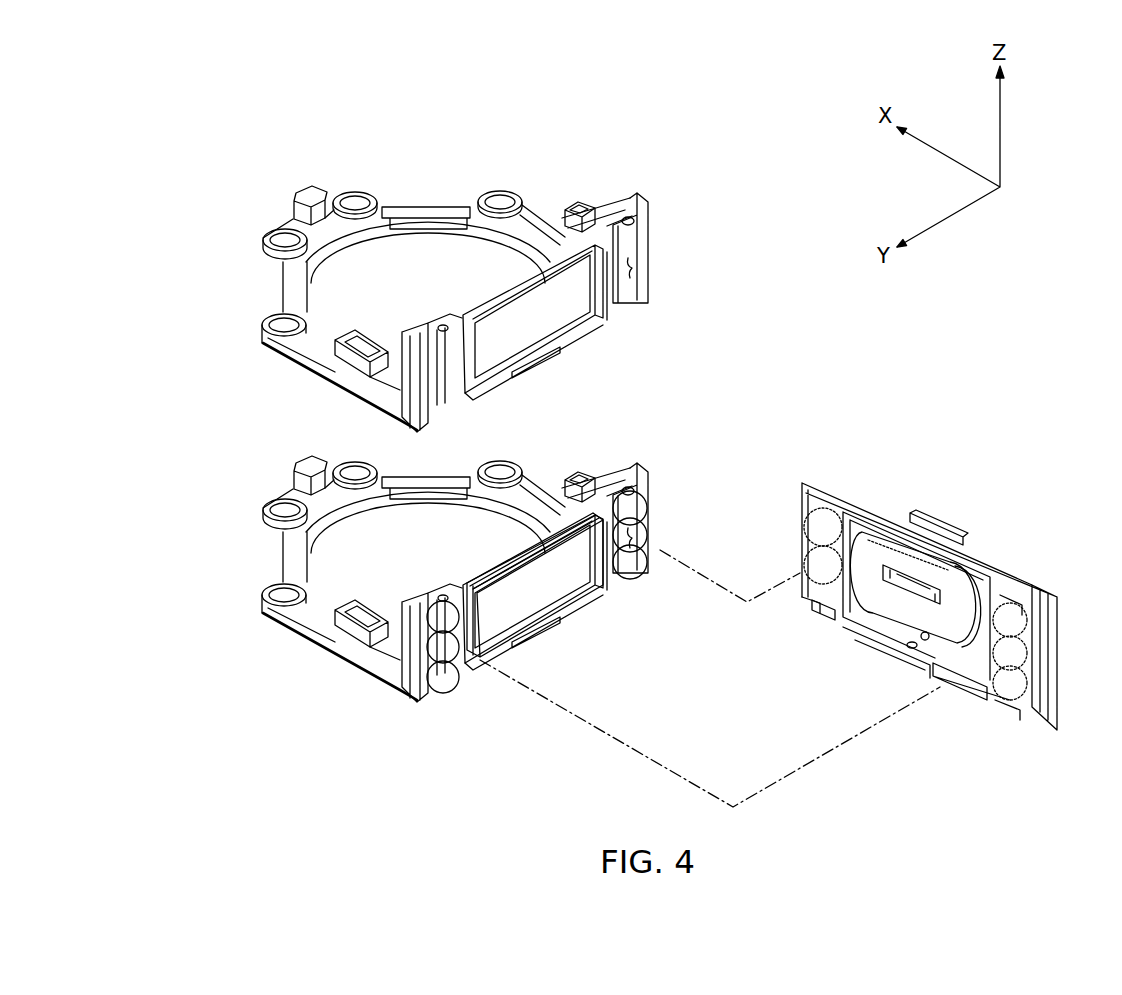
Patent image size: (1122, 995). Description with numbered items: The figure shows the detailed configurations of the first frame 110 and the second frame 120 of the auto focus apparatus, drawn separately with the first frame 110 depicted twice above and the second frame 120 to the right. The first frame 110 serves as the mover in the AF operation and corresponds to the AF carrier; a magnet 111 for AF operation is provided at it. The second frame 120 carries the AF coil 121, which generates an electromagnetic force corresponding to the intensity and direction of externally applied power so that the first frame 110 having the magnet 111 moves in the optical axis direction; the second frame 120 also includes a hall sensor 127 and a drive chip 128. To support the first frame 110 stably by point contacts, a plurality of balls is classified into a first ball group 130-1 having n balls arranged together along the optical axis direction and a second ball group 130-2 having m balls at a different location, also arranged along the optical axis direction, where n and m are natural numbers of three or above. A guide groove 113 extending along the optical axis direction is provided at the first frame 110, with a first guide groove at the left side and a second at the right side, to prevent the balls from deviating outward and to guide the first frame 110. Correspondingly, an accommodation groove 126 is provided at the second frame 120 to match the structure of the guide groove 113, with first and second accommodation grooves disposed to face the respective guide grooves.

The first frame 110 is at (521, 444).
The magnet 111 is at (543, 577).
The guide groove 113 is at (638, 258).
The second frame 120 is at (891, 579).
The AF coil 121 is at (868, 583).
The accommodation groove 126 is at (813, 510).
The hall sensor 127 is at (923, 590).
The drive chip 128 is at (850, 553).
The first ball group 130-1 is at (443, 648).
The second ball group 130-2 is at (640, 552).